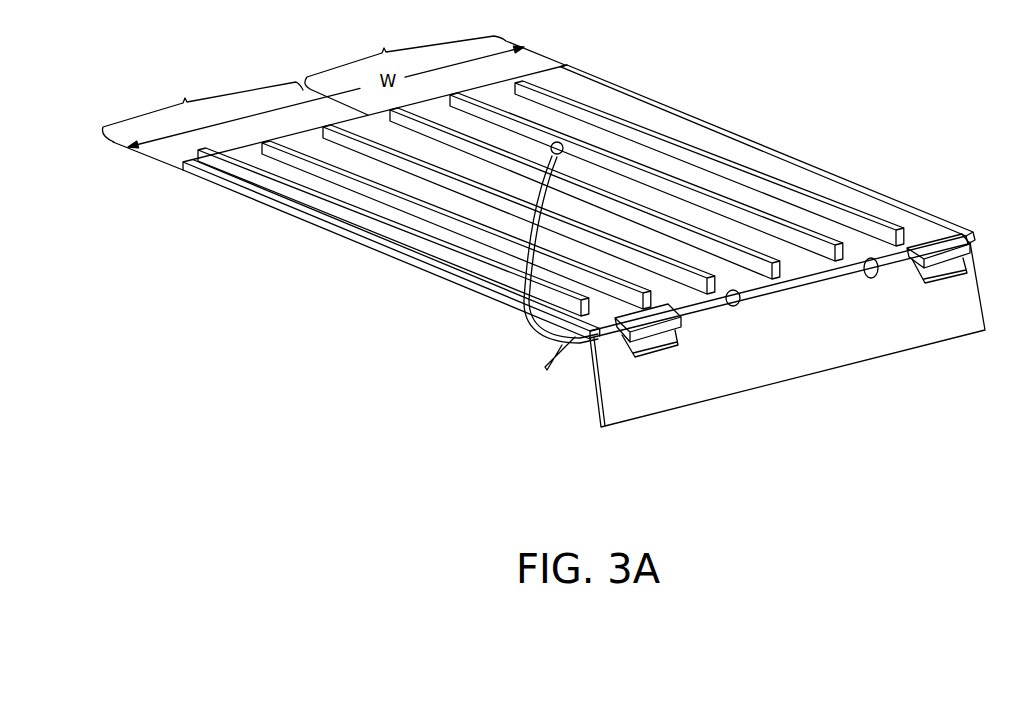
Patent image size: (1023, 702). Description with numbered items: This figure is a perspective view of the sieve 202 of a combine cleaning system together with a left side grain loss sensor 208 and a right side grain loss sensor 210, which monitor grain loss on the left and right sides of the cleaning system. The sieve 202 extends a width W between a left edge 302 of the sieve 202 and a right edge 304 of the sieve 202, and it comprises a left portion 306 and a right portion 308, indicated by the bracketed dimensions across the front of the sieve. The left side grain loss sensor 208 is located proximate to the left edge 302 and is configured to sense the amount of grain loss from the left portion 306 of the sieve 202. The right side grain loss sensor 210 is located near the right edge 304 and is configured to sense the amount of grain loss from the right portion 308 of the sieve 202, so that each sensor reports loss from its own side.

The sieve 202 is at (757, 163).
The left side grain loss sensor 208 is at (653, 389).
The right side grain loss sensor 210 is at (948, 310).
The left edge 302 is at (452, 282).
The right edge 304 is at (880, 183).
The left portion 306 is at (231, 122).
The right portion 308 is at (435, 70).